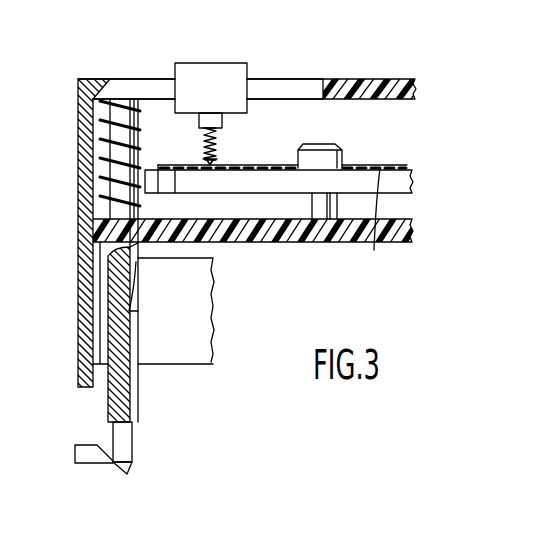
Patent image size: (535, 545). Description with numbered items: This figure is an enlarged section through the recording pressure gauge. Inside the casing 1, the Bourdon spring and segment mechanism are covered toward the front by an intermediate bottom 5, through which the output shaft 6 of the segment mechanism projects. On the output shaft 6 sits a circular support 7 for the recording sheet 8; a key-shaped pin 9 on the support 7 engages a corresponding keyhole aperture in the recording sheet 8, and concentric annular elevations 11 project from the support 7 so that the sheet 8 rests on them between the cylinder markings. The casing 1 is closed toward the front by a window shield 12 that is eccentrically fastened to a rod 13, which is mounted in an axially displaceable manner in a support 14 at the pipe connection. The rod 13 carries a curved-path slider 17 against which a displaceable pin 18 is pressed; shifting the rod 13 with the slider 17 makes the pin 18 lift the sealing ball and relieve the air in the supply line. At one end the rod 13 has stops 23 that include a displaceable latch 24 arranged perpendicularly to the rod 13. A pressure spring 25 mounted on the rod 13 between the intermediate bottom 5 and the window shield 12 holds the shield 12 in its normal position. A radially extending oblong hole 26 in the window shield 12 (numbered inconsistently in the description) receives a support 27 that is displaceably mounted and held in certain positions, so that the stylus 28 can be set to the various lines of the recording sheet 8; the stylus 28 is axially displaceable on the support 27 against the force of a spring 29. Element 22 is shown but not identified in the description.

The casing 1 is at (88, 311).
The intermediate bottom 5 is at (412, 230).
The output shaft 6 is at (322, 212).
The circular support 7 is at (397, 180).
The recording sheet 8 is at (385, 165).
The key-shaped pin 9 is at (330, 145).
The concentric annular elevations 11 is at (373, 222).
The window shield 12 is at (402, 84).
The rod 13 is at (115, 139).
The support 14 is at (170, 353).
The curved-path slider 17 is at (130, 392).
The displaceable pin 18 is at (133, 308).
The pin 22 is at (117, 437).
The stops 23 is at (126, 475).
The displaceable latch 24 is at (88, 456).
The pressure spring 25 is at (99, 187).
The upper arm 26 is at (291, 87).
The support 27 is at (209, 76).
The stylus 28 is at (218, 163).
The spring 29 is at (205, 143).